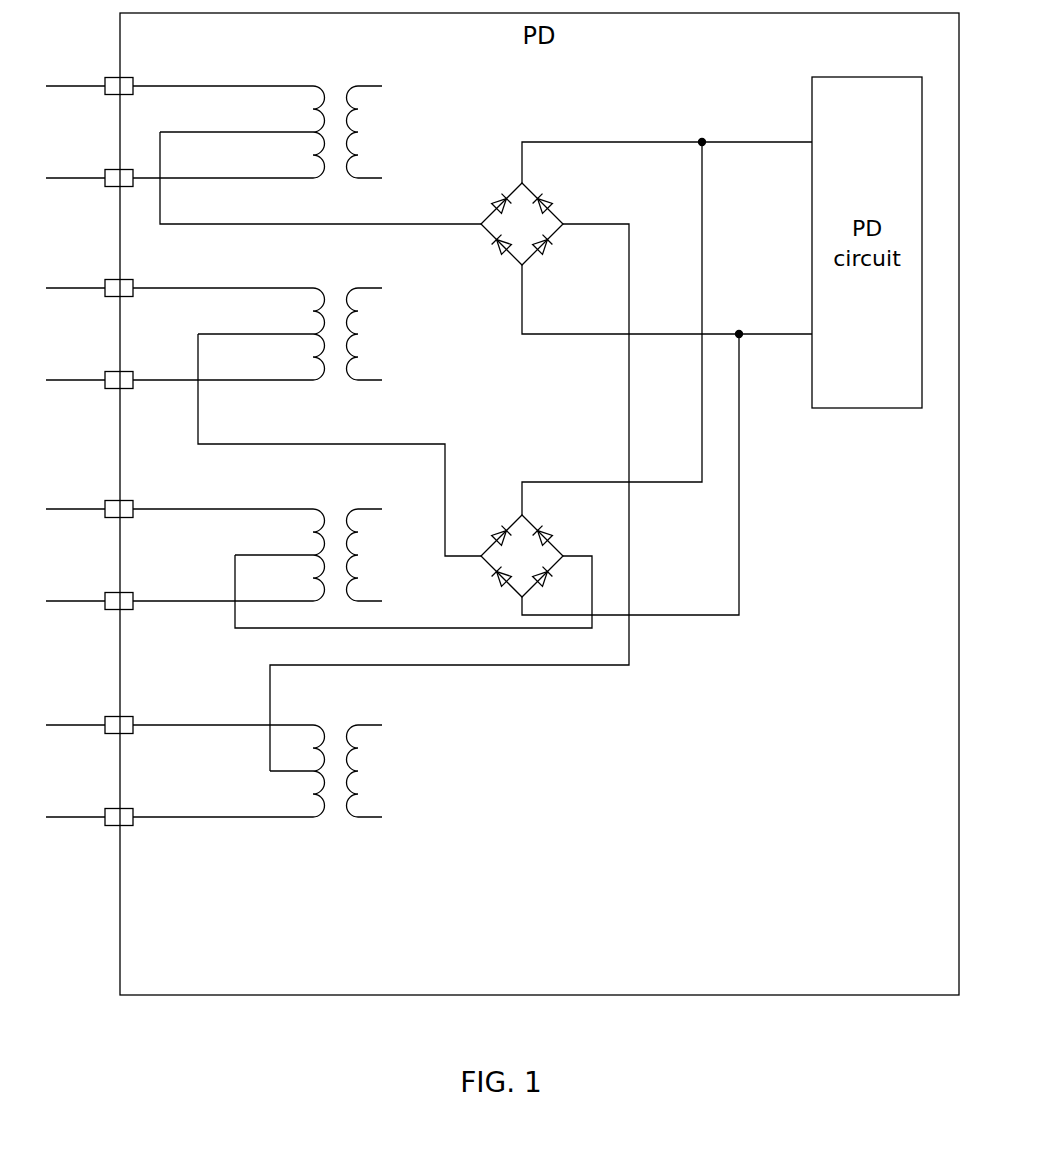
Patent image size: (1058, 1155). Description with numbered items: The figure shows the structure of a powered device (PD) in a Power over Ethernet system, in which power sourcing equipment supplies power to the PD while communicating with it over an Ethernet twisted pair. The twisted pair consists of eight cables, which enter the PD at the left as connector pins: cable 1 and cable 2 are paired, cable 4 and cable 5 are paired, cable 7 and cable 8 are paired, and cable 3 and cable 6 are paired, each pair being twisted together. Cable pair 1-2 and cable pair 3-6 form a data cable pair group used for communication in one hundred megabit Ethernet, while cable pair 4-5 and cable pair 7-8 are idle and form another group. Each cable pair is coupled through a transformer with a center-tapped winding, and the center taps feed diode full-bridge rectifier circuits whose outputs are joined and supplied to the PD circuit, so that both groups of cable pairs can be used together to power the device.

The cable 1 is at (179, 74).
The cable 2 is at (179, 166).
The cable 3 is at (179, 713).
The cable 4 is at (179, 276).
The cable 5 is at (179, 368).
The cable 6 is at (179, 805).
The cable 7 is at (179, 497).
The cable 8 is at (179, 589).